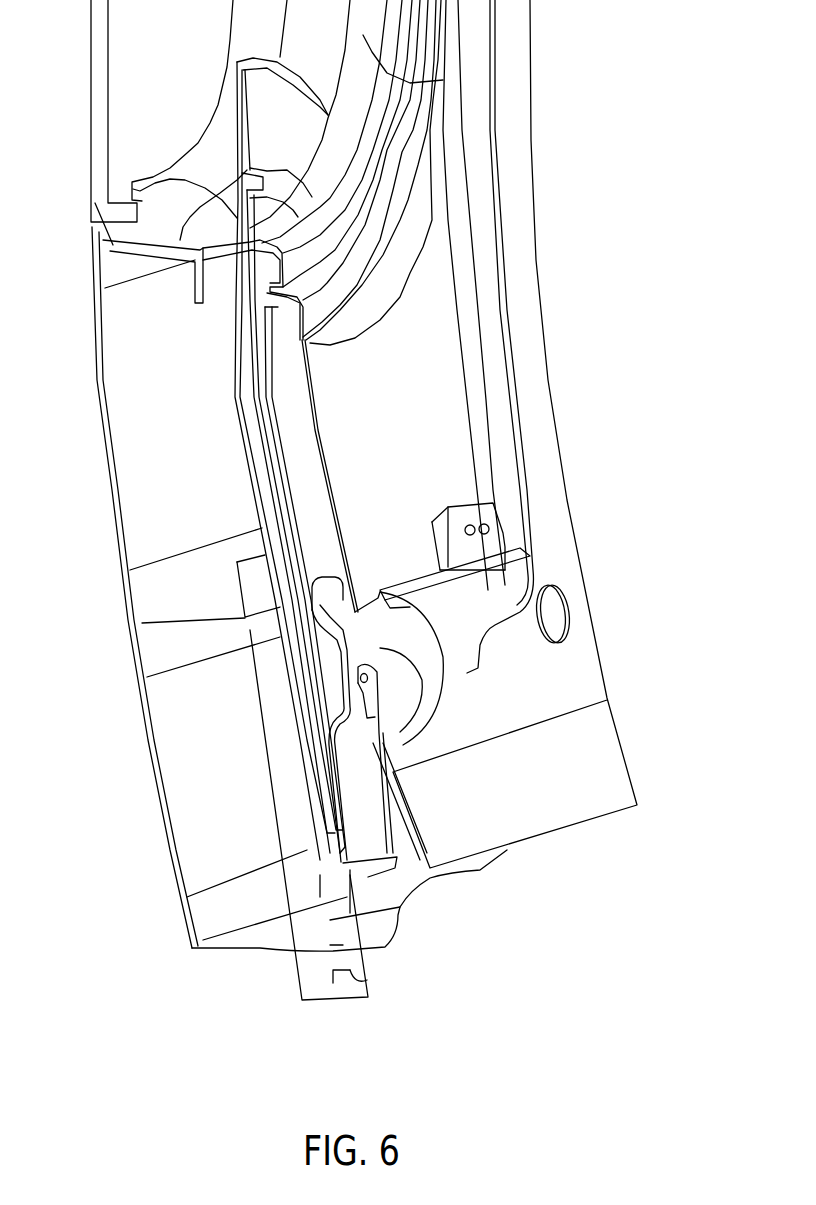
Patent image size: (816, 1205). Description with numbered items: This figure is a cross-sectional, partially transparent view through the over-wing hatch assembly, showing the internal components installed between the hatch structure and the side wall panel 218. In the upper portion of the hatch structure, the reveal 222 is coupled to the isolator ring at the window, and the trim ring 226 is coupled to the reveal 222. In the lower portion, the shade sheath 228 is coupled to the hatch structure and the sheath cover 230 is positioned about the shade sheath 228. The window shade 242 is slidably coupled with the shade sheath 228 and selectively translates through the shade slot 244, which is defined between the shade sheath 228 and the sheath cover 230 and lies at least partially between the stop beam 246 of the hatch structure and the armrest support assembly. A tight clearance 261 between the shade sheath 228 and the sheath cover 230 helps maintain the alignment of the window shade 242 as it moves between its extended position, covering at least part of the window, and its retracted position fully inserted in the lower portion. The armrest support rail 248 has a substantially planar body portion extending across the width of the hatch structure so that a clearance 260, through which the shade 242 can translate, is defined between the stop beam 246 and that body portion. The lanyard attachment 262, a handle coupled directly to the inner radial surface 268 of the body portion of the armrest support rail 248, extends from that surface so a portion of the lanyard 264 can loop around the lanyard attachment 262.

The side wall panel 218 is at (593, 750).
The reveal 222 is at (443, 80).
The trim ring 226 is at (403, 252).
The shade sheath 228 is at (240, 378).
The sheath cover 230 is at (290, 430).
The window shade 242 is at (287, 137).
The shade slot 244 is at (233, 276).
The stop beam 246 is at (253, 572).
The armrest support rail 248 is at (507, 580).
The clearance 260 is at (332, 1003).
The tight clearance 261 is at (350, 970).
The lanyard attachment 262 is at (400, 665).
The lanyard 264 is at (377, 692).
The inner radial surface 268 is at (480, 602).